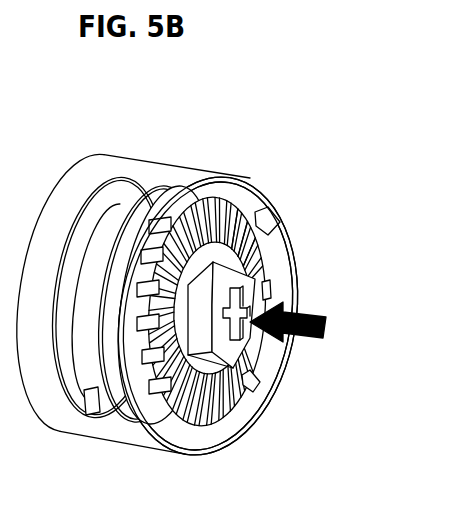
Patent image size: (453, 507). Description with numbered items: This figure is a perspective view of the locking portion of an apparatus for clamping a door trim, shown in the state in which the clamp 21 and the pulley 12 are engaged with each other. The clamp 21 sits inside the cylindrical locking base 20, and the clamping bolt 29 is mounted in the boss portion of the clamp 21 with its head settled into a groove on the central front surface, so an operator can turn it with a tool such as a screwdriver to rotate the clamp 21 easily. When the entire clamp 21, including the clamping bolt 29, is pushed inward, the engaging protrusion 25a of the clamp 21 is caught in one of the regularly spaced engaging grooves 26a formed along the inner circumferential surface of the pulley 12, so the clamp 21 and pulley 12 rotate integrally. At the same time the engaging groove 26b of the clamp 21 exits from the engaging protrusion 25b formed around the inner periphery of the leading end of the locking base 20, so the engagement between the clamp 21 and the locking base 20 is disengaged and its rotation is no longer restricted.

The pulley 12 is at (116, 178).
The locking base 20 is at (95, 433).
The clamp 21 is at (168, 420).
The engaging protrusion 25a is at (185, 205).
The engaging protrusion 25b is at (278, 228).
The engaging groove 26a is at (152, 230).
The engaging groove 26b is at (258, 205).
The clamping bolt 29 is at (243, 345).